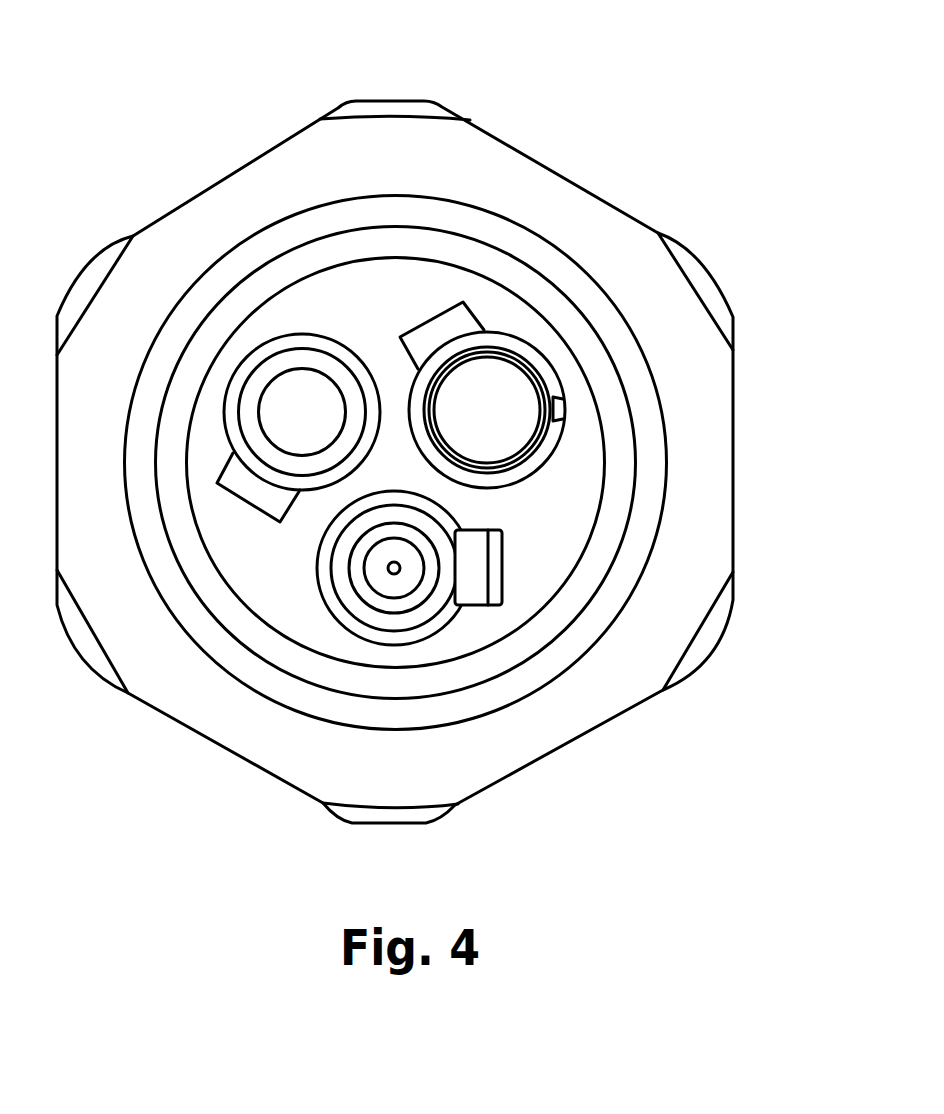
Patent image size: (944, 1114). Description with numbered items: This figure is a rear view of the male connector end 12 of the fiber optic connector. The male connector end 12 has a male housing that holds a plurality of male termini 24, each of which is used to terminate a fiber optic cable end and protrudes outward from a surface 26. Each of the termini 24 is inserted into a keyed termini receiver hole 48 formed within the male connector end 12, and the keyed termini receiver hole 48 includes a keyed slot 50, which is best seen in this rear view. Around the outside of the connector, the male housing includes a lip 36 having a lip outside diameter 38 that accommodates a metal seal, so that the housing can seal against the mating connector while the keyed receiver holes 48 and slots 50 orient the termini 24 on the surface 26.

The male connector end 12 is at (532, 82).
The male termini 24 is at (413, 603).
The surface 26 is at (535, 515).
The lip 36 is at (627, 255).
The lip outside diameter 38 is at (703, 268).
The keyed termini receiver hole 48 is at (619, 265).
The keyed slot 50 is at (443, 332).